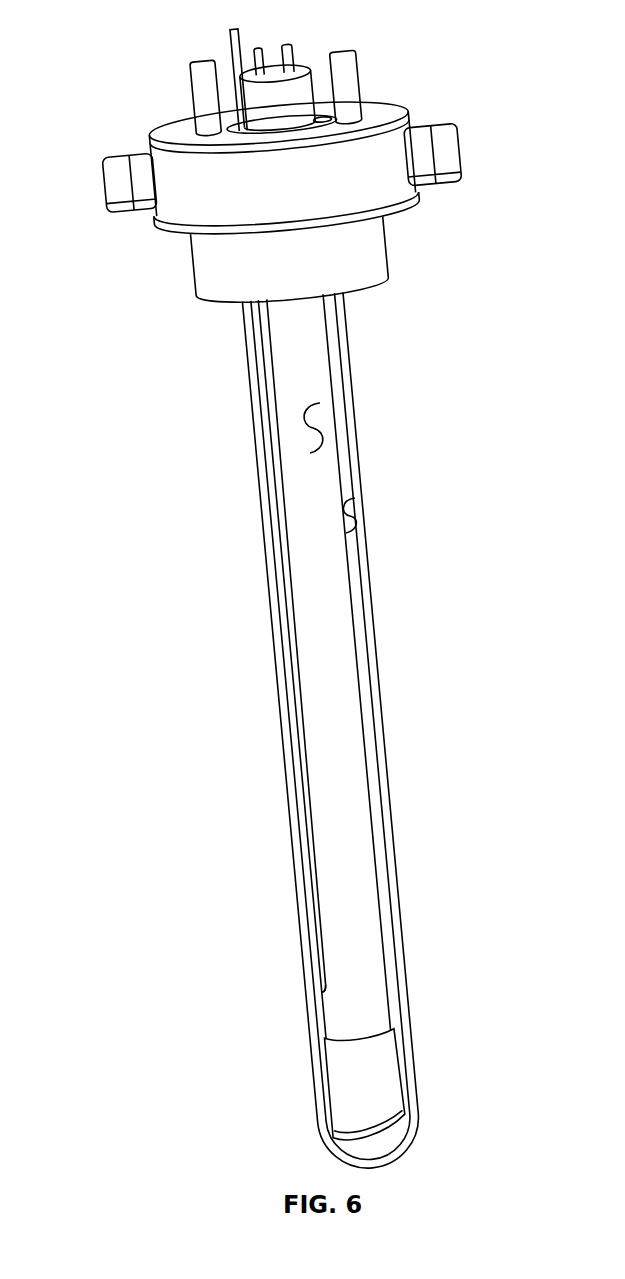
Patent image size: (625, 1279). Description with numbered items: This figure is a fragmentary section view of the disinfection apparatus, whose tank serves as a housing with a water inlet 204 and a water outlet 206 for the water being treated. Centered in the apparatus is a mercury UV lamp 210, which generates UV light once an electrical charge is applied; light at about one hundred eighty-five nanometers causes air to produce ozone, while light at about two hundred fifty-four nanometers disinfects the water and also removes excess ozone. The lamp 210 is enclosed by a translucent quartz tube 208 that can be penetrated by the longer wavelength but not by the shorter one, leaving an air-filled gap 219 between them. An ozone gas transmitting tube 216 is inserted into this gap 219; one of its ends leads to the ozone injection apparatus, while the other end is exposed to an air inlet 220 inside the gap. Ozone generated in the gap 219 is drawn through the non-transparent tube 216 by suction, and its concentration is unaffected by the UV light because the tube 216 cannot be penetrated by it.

The water inlet 204 is at (205, 53).
The water outlet 206 is at (343, 43).
The translucent quartz tube 208 is at (380, 634).
The mercury UV lamp 210 is at (322, 425).
The ozone gas transmitting tube 216 is at (271, 550).
The gap 219 is at (359, 513).
The air inlet 220 is at (322, 996).